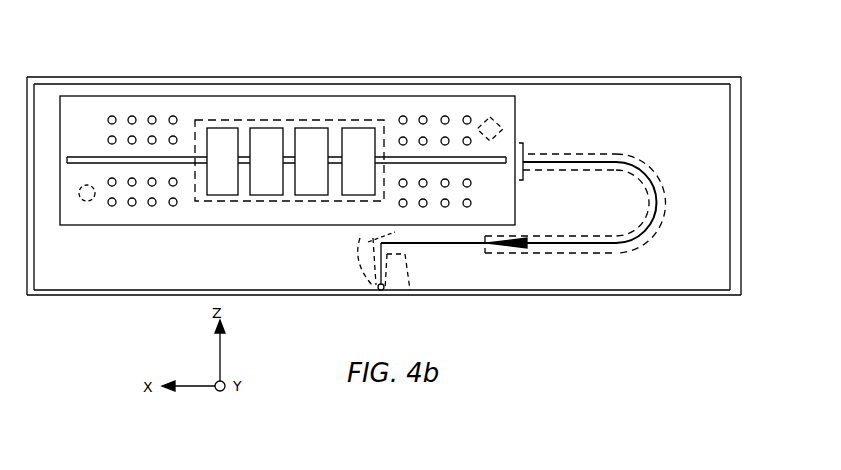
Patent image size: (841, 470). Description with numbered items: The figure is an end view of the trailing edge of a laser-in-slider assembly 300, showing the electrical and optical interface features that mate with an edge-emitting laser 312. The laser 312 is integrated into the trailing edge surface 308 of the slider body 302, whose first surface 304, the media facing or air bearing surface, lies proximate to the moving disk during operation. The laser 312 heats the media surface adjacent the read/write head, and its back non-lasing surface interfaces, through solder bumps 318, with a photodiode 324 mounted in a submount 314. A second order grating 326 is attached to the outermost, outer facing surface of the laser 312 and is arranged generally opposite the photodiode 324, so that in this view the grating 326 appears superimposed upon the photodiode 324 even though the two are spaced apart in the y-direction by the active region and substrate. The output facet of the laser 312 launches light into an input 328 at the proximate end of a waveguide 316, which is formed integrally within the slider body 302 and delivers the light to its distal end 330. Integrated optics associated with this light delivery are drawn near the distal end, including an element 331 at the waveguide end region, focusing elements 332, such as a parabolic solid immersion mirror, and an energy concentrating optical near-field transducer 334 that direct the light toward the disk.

The assembly 300 is at (384, 187).
The slider body 302 is at (597, 84).
The first surface 304 is at (508, 295).
The trailing edge surface 308 is at (735, 285).
The submount 314 is at (75, 262).
The edge-emitting laser 312 is at (294, 80).
The solder bumps 318 is at (425, 114).
The photodiode 324 is at (193, 210).
The grating 326 is at (244, 205).
The input 328 is at (523, 158).
The waveguide 316 is at (630, 155).
The distal end 330 is at (520, 253).
The tube end section 331 is at (381, 243).
The focusing elements 332 is at (372, 262).
The optical near-field transducer 334 is at (378, 287).